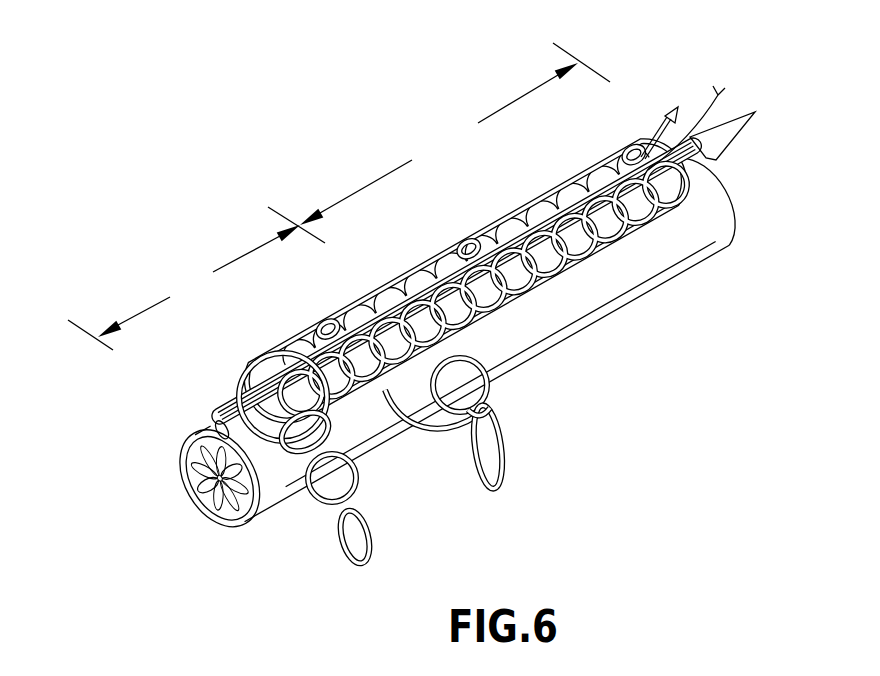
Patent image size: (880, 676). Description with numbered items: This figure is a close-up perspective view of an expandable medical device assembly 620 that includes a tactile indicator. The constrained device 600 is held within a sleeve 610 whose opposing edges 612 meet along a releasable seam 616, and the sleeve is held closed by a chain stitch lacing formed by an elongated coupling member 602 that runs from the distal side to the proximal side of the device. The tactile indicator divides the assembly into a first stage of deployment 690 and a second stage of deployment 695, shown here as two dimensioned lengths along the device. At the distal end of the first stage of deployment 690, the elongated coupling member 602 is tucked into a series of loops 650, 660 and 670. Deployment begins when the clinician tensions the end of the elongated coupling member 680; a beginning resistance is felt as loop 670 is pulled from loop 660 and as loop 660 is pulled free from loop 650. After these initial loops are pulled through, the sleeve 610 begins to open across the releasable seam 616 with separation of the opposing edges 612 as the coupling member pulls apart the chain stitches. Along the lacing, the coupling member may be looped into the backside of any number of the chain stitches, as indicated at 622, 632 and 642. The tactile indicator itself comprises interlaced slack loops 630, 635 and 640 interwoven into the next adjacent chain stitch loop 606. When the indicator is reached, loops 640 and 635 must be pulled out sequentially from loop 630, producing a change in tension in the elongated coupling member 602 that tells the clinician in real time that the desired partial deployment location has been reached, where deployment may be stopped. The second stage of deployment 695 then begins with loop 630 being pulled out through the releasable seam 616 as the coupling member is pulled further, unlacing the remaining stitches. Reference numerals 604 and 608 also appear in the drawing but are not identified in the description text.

The constrained device 600 is at (222, 525).
The elongated coupling member 602 is at (246, 364).
The cord strand 604 is at (393, 400).
The chain stitch loop 606 is at (493, 337).
The mandrel rod 608 is at (697, 183).
The sleeve 610 is at (563, 328).
The opposing edges of the sleeve 612 is at (752, 114).
The releasable seam 616 is at (215, 405).
The assembly 620 is at (367, 57).
The backside loop of chain stitch 622 is at (320, 300).
The interlaced slack loop 630 is at (490, 383).
The backside loop of chain stitch 632 is at (473, 223).
The interlaced slack loop 635 is at (490, 410).
The interlaced slack loop 640 is at (513, 463).
The backside loop of chain stitch 642 is at (619, 134).
The loop 650 is at (323, 433).
The loop 660 is at (360, 474).
The loop 670 is at (378, 543).
The end of the elongated coupling member 680 is at (683, 122).
The first stage of deployment 690 is at (196, 278).
The second stage of deployment 695 is at (455, 134).